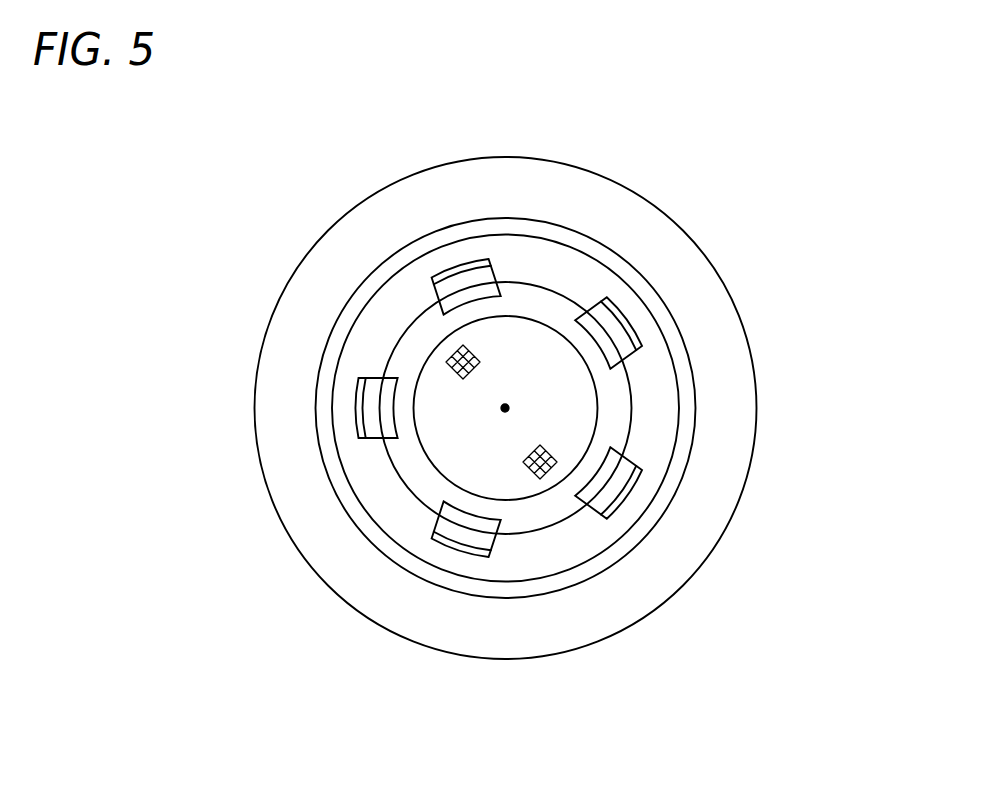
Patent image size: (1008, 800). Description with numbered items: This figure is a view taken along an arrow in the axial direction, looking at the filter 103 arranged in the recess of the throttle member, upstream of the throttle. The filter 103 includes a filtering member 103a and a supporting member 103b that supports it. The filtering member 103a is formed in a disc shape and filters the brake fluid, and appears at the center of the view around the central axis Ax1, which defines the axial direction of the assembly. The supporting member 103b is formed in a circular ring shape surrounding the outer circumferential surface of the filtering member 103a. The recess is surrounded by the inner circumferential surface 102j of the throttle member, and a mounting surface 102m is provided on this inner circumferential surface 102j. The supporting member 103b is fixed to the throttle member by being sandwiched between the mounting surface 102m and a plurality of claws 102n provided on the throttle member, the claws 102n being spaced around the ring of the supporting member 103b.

The inner circumferential surface 102j is at (343, 357).
The mounting surface 102m is at (380, 323).
The claws 102n is at (460, 285).
The filter 103 is at (639, 313).
The filtering member 103a is at (575, 422).
The supporting member 103b is at (610, 402).
The central axis Ax1 is at (500, 408).